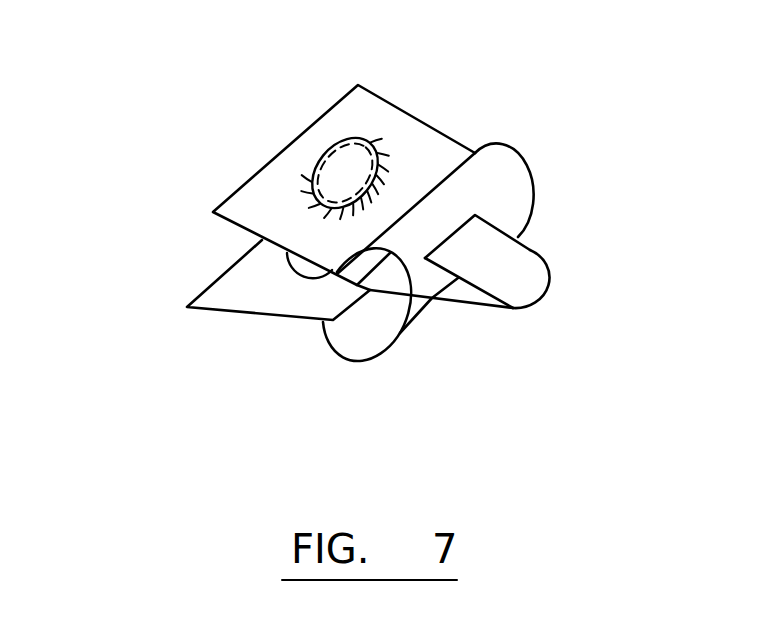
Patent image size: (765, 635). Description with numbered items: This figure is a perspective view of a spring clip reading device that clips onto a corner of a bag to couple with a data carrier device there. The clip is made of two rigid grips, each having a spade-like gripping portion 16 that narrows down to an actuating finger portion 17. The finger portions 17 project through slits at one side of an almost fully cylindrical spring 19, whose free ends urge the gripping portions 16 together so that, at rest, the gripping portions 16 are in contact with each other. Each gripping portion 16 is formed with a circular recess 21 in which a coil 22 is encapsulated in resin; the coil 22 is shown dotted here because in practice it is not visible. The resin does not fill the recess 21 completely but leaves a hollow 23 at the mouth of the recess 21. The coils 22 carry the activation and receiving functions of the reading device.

The gripping portion 16 is at (413, 116).
The actuating finger portion 17 is at (515, 265).
The cylindrical spring 19 is at (518, 186).
The circular recess 21 is at (312, 197).
The coil 22 is at (327, 160).
The hollow 23 is at (298, 265).